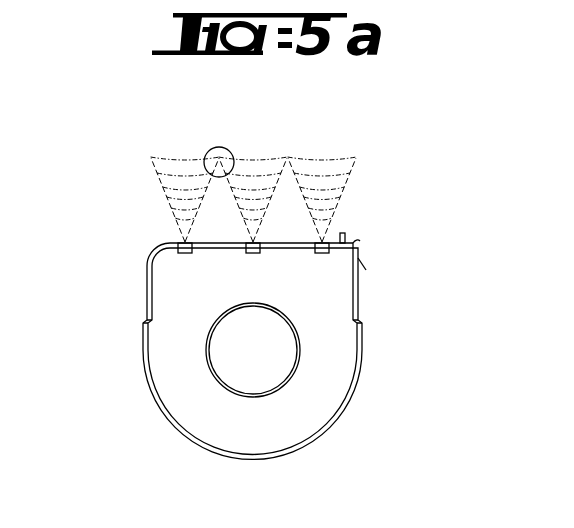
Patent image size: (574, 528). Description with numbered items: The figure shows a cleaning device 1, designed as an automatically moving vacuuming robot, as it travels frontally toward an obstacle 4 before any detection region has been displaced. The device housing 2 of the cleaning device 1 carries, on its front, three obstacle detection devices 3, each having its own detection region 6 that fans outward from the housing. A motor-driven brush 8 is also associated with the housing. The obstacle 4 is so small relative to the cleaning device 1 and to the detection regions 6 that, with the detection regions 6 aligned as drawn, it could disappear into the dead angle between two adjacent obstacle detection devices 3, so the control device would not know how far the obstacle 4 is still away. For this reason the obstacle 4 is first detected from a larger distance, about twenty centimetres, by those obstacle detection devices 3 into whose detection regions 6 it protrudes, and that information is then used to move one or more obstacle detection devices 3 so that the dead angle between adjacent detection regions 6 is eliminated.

The cleaning device 1 is at (224, 351).
The device housing 2 is at (323, 397).
The obstacle detection device 3 is at (178, 243).
The obstacle 4 is at (209, 151).
The detection region 6 is at (307, 165).
The brush 8 is at (356, 246).